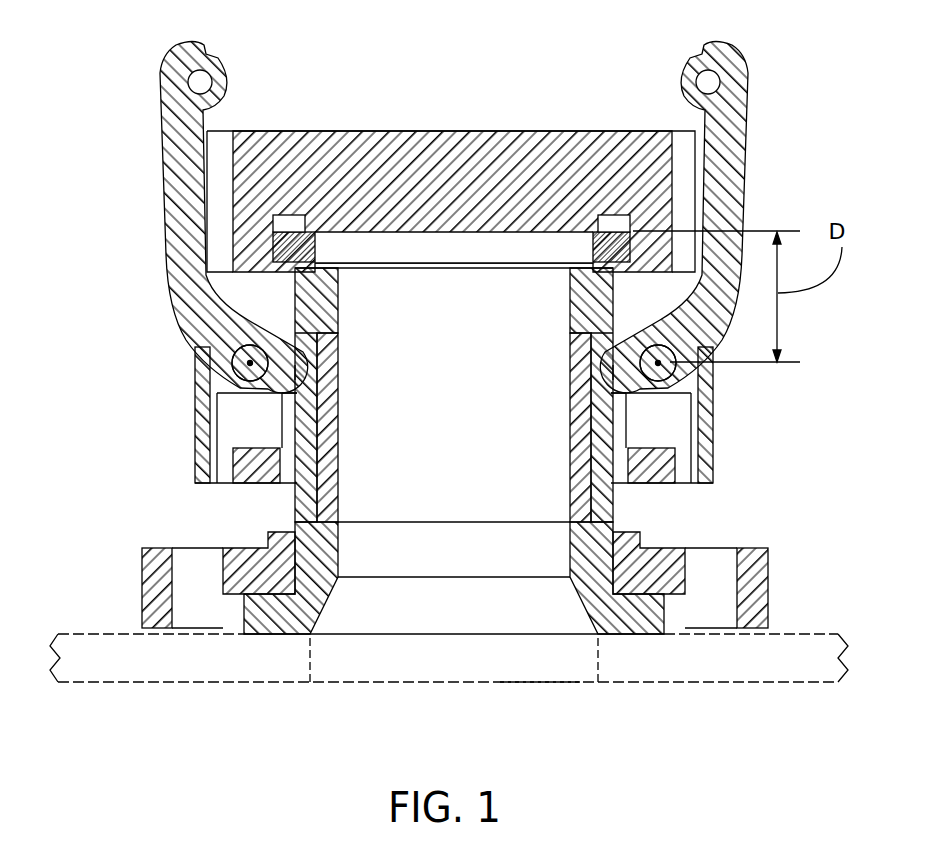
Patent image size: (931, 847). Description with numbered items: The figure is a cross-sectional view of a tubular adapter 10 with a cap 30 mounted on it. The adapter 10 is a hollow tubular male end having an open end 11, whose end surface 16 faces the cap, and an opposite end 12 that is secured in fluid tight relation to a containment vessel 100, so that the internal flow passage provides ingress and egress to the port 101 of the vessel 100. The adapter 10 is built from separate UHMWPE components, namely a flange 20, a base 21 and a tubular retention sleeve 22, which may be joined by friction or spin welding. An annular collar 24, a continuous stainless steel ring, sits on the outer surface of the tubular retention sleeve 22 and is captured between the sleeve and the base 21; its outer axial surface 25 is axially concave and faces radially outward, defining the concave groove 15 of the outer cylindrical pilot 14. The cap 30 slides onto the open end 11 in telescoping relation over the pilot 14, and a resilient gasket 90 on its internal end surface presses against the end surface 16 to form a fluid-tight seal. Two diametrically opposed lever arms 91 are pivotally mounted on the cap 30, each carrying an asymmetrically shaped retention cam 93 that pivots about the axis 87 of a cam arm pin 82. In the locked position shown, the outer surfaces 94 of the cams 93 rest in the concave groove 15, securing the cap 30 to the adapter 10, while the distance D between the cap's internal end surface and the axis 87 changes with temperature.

The adapter 10 is at (377, 645).
The open end 11 is at (498, 262).
The opposite end 12 is at (283, 636).
The outer cylindrical pilot 14 is at (295, 493).
The concave groove 15 is at (298, 370).
The end surface 16 is at (345, 262).
The flange 20 is at (142, 580).
The base 21 is at (620, 618).
The tubular retention sleeve 22 is at (340, 455).
The annular collar 24 is at (335, 327).
The outer axial surface 25 is at (300, 352).
The cap 30 is at (425, 124).
The cam arm pin 82 is at (245, 362).
The axis 87 is at (242, 366).
The gasket 90 is at (320, 250).
The lever arm 91 is at (178, 152).
The retention cam 93 is at (262, 323).
The outer surface 94 is at (295, 395).
The containment vessel 100 is at (725, 668).
The port 101 is at (538, 692).